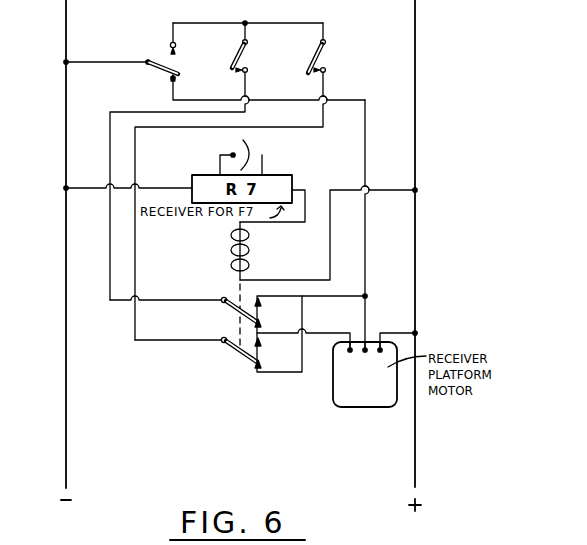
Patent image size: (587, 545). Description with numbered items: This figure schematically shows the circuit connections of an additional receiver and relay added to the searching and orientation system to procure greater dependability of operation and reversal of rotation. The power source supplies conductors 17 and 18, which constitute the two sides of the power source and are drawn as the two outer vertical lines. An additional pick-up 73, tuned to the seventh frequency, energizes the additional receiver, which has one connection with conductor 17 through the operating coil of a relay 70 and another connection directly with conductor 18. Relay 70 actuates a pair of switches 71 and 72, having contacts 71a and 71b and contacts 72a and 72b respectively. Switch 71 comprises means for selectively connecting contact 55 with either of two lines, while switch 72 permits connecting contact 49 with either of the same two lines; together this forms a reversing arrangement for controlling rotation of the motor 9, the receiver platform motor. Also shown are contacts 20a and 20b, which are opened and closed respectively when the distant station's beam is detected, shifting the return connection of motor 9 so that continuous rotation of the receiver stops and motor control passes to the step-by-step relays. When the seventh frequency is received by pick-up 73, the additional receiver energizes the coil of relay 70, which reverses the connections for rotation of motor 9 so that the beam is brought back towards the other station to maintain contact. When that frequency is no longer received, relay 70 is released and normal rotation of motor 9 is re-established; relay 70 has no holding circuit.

The motor 9 is at (356, 391).
The conductor 17 is at (417, 487).
The conductor 18 is at (65, 487).
The contacts 20a is at (177, 78).
The contacts 20b is at (177, 46).
The contact 49 is at (326, 53).
The contact 55 is at (248, 55).
The relay 70 is at (230, 248).
The switch 71 is at (222, 297).
The contact 71a is at (271, 306).
The contact 71b is at (272, 326).
The switch 72 is at (222, 343).
The contact 72a is at (271, 346).
The contact 72b is at (272, 365).
The pick-up 73 is at (250, 148).